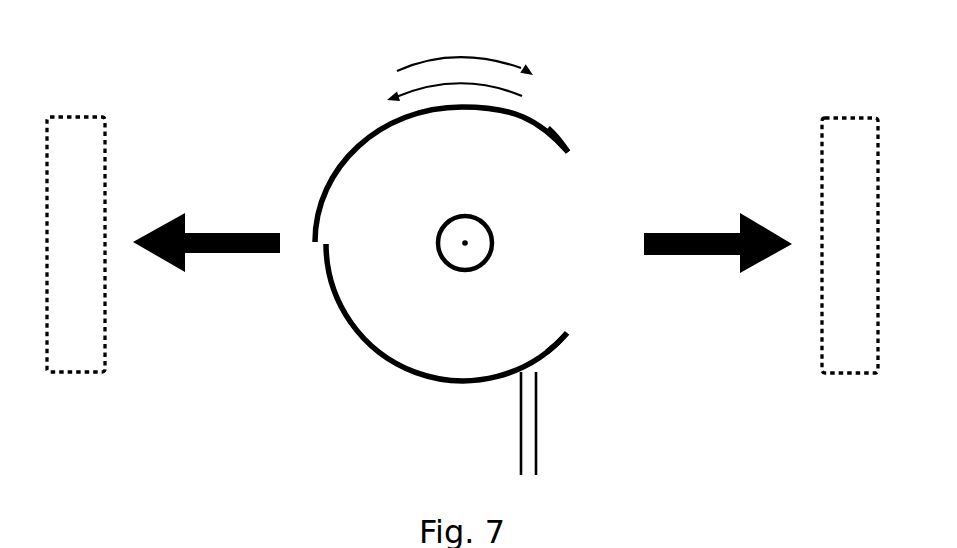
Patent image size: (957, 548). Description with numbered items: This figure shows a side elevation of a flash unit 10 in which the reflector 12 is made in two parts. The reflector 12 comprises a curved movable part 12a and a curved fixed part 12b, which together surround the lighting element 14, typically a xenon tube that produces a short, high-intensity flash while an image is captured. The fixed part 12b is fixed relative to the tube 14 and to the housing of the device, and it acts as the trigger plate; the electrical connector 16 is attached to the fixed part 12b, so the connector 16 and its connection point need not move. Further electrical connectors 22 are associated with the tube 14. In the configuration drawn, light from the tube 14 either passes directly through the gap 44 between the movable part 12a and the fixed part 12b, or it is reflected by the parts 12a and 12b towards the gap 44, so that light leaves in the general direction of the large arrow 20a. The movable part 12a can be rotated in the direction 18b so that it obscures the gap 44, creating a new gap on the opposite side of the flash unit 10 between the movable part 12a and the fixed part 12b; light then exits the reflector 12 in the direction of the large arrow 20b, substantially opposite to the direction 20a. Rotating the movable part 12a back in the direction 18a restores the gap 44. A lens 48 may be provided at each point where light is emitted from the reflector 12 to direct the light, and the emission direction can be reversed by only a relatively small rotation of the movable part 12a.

The flash unit 10 is at (659, 91).
The reflector 12 is at (309, 271).
The movable part 12a is at (562, 138).
The fixed part 12b is at (553, 355).
The lighting element 14 is at (495, 243).
The electrical connector 16 is at (538, 415).
The direction 18a is at (405, 88).
The direction 18b is at (498, 63).
The large arrow 20a is at (760, 263).
The large arrow 20b is at (163, 262).
The electrical connectors 22 is at (465, 244).
The gap 44 is at (565, 278).
The lens 48 is at (77, 116).